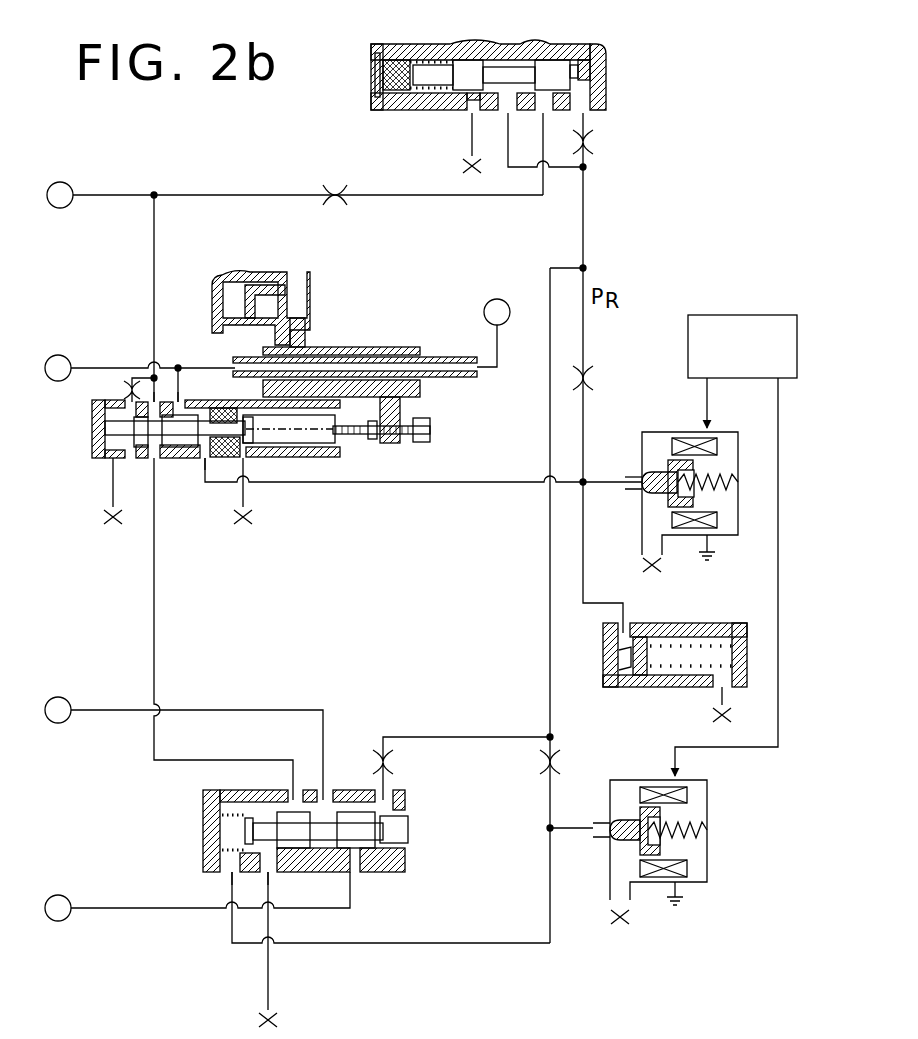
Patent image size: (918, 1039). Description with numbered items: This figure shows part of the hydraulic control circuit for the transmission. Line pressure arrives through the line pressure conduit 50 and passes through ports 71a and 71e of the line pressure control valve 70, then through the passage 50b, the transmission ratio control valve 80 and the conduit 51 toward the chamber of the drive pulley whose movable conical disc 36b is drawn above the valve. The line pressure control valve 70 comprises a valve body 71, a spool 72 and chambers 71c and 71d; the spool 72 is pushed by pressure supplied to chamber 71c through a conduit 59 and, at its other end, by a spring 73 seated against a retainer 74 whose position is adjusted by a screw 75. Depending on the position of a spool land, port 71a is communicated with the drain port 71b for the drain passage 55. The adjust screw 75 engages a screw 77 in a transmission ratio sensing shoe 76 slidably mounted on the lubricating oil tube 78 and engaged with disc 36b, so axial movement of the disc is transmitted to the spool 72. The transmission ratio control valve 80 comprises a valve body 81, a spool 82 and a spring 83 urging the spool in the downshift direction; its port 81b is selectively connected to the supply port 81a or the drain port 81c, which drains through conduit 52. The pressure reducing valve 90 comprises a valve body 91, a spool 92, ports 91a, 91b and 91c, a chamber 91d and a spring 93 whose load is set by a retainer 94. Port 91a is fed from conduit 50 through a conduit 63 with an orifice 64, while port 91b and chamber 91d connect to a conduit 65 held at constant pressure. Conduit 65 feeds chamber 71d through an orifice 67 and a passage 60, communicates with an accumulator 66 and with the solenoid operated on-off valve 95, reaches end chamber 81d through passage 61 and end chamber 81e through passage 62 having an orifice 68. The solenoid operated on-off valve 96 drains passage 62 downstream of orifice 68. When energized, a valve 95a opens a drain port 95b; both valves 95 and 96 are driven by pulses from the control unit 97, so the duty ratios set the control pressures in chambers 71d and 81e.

The movable conical disc 36b is at (310, 295).
The line pressure conduit 50 is at (113, 196).
The passage 50b is at (156, 696).
The conduit 51 is at (123, 711).
The conduit 52 is at (139, 913).
The drain passage 55 is at (104, 369).
The conduit 59 is at (143, 376).
The passage 60 is at (451, 483).
The passage 61 is at (432, 737).
The passage 62 is at (428, 944).
The conduit 63 is at (388, 198).
The orifice 64 is at (338, 210).
The conduit 65 is at (592, 226).
The accumulator 66 is at (726, 623).
The orifice 67 is at (592, 378).
The orifice 68 is at (542, 762).
The line pressure control valve 70 is at (277, 397).
The valve body 71 is at (93, 426).
The port 71a is at (158, 398).
The drain port 71b is at (182, 400).
The chamber 71c is at (125, 462).
The chamber 71d is at (203, 462).
The port 71e is at (150, 462).
The spool 72 is at (192, 458).
The spring 73 is at (272, 455).
The retainer 74 is at (318, 456).
The screw 75 is at (371, 442).
The transmission ratio sensing shoe 76 is at (383, 347).
The screw 77 is at (432, 430).
The lubricating oil tube 78 is at (445, 357).
The transmission ratio control valve 80 is at (311, 816).
The valve body 81 is at (394, 870).
The pressure oil supply port 81a is at (290, 788).
The port 81b is at (325, 795).
The drain port 81c is at (348, 878).
The end chamber 81d is at (392, 797).
The end chamber 81e is at (220, 828).
The spool 82 is at (366, 850).
The spring 83 is at (218, 806).
The pressure reducing valve 90 is at (524, 57).
The valve body 91 is at (532, 50).
The port 91a is at (541, 170).
The port 91b is at (505, 160).
The port 91c is at (468, 110).
The chamber 91d is at (602, 100).
The spool 92 is at (567, 68).
The spring 93 is at (425, 58).
The retainer 94 is at (392, 55).
The solenoid operated on-off control valve 95 is at (664, 480).
The valve 95a is at (660, 487).
The drain port 95b is at (625, 477).
The solenoid operated on-off control valve 96 is at (710, 877).
The control unit 97 is at (756, 315).